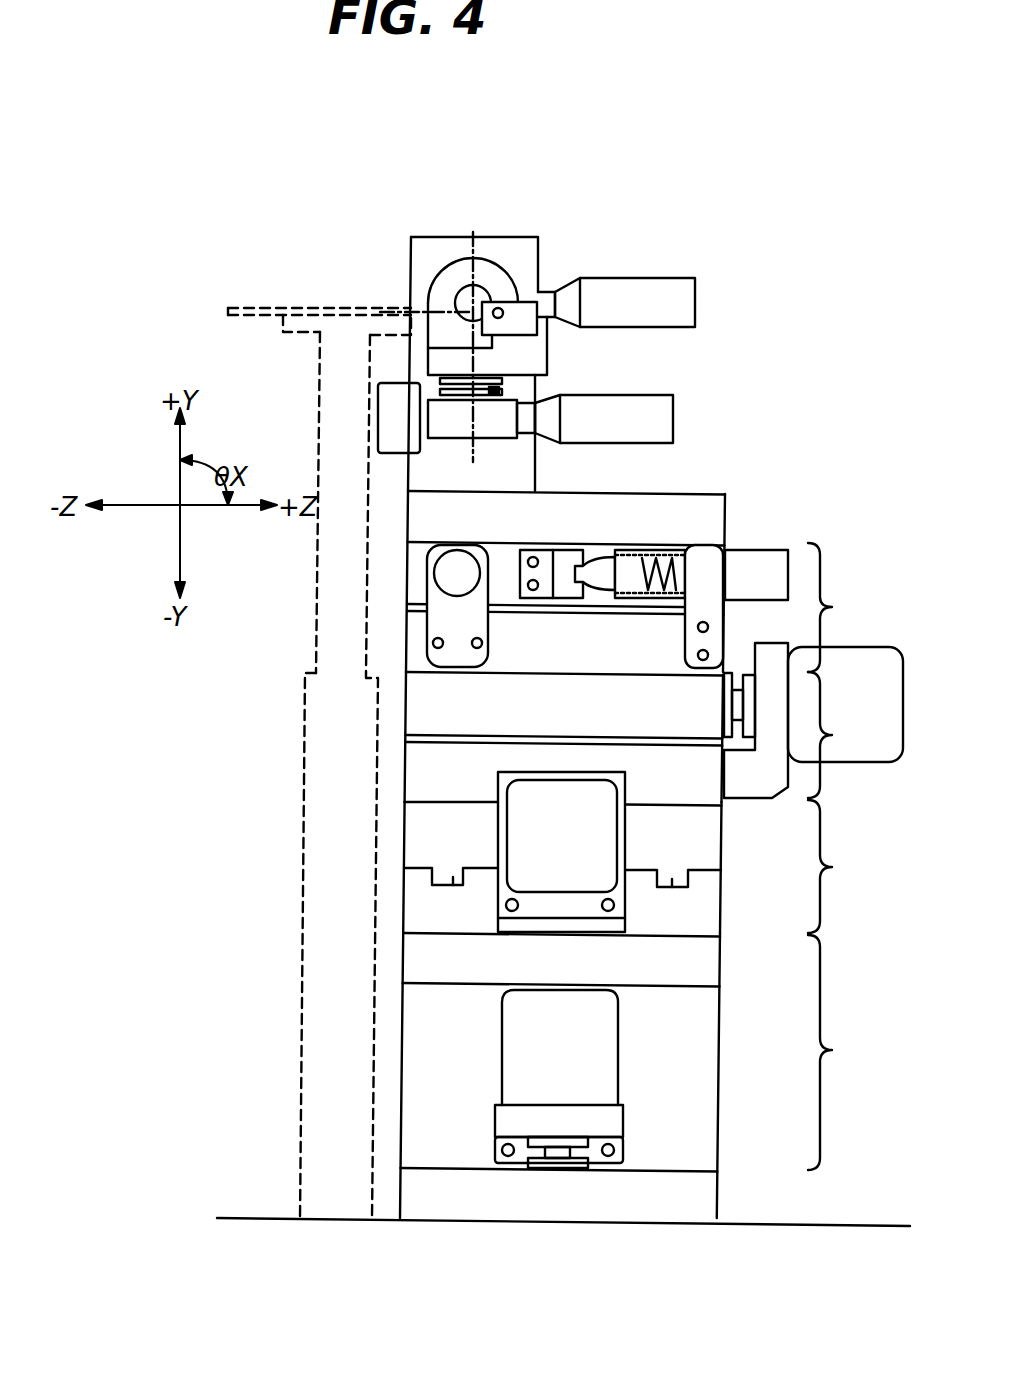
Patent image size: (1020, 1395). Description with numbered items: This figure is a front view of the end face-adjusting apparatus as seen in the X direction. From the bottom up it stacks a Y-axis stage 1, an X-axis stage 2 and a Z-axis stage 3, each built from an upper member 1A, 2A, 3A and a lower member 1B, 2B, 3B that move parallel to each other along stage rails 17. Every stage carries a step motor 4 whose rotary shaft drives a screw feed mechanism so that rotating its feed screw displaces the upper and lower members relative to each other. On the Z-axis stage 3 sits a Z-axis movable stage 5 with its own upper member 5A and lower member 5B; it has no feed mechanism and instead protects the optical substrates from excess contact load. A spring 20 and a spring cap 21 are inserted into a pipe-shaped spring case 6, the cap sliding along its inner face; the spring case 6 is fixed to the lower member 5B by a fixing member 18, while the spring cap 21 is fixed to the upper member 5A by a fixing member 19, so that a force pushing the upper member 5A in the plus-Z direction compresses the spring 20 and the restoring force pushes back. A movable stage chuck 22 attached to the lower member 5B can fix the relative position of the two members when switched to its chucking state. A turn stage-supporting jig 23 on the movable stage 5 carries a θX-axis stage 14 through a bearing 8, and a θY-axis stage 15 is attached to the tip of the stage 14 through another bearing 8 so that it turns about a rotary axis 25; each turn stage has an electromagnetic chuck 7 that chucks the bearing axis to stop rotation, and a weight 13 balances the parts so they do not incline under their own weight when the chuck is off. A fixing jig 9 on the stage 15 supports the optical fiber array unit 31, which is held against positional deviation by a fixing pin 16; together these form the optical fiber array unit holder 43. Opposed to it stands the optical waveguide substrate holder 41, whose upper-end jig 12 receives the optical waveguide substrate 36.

The Y-axis stage 1 is at (563, 1079).
The upper member 1A is at (705, 962).
The lower member 1B is at (690, 1126).
The X-axis stage 2 is at (631, 866).
The upper member 2A is at (415, 830).
The lower member 2B is at (415, 900).
The Z-axis stage 3 is at (632, 722).
The upper member 3A is at (422, 713).
The lower member 3B is at (420, 780).
The step motor 4 is at (868, 670).
The Z-axis movable stage 5 is at (633, 581).
The upper member 5A is at (440, 572).
The lower member 5B is at (412, 643).
The spring case 6 is at (762, 550).
The electromagnetic chuck 7 is at (668, 300).
The bearing 8 is at (505, 392).
The fixing jig 9 is at (522, 318).
The jig 12 is at (300, 334).
The weight 13 is at (392, 410).
The θX-axis stage 14 is at (462, 272).
The θY-axis stage 15 is at (528, 344).
The fixing pin 16 is at (505, 312).
The stage rails 17 is at (453, 882).
The fixing member 18 is at (722, 628).
The fixing member 19 is at (560, 586).
The spring 20 is at (662, 592).
The spring cap 21 is at (605, 586).
The movable stage chuck 22 is at (432, 604).
The turn stage-supporting jig 23 is at (412, 256).
The rotary axis 25 is at (474, 453).
The optical fiber array unit 31 is at (500, 300).
The optical waveguide substrate 36 is at (264, 306).
The optical waveguide substrate holder 41 is at (300, 1022).
The optical fiber array unit holder 43 is at (686, 252).